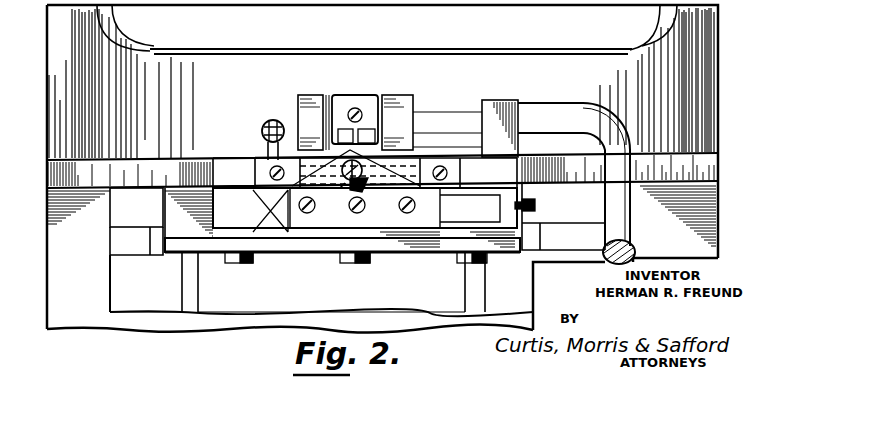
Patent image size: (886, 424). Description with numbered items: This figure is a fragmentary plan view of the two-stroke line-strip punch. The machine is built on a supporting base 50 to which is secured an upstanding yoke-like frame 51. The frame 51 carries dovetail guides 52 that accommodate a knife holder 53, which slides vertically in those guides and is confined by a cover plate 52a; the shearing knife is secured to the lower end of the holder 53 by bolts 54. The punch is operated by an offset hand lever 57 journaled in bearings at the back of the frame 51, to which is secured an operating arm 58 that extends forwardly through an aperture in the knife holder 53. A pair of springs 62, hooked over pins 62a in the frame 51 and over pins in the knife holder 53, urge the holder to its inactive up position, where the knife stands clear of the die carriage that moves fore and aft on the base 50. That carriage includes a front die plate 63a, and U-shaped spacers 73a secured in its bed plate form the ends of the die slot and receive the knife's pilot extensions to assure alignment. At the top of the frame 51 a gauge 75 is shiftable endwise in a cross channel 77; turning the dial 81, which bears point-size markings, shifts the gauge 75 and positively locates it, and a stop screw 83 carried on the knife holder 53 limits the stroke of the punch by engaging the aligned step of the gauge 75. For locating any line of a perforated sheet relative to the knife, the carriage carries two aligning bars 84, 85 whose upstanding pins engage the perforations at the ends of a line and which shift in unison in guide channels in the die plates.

The supporting base 50 is at (705, 212).
The yoke-like frame 51 is at (660, 90).
The dovetail guides 52 is at (262, 206).
The cover plate 52a is at (440, 245).
The knife holder 53 is at (170, 253).
The bolts 54 is at (246, 265).
The offset hand lever 57 is at (572, 100).
The operating arm 58 is at (356, 95).
The springs 62 is at (265, 125).
The pins 62a is at (458, 135).
The front die plate 63a is at (270, 300).
The U-shaped spacers 73a is at (535, 228).
The gauge 75 is at (306, 150).
The cross channel 77 is at (256, 170).
The dial 81 is at (336, 258).
The stop screw 83 is at (357, 199).
The aligning bar 84 is at (203, 298).
The aligning bar 85 is at (466, 292).